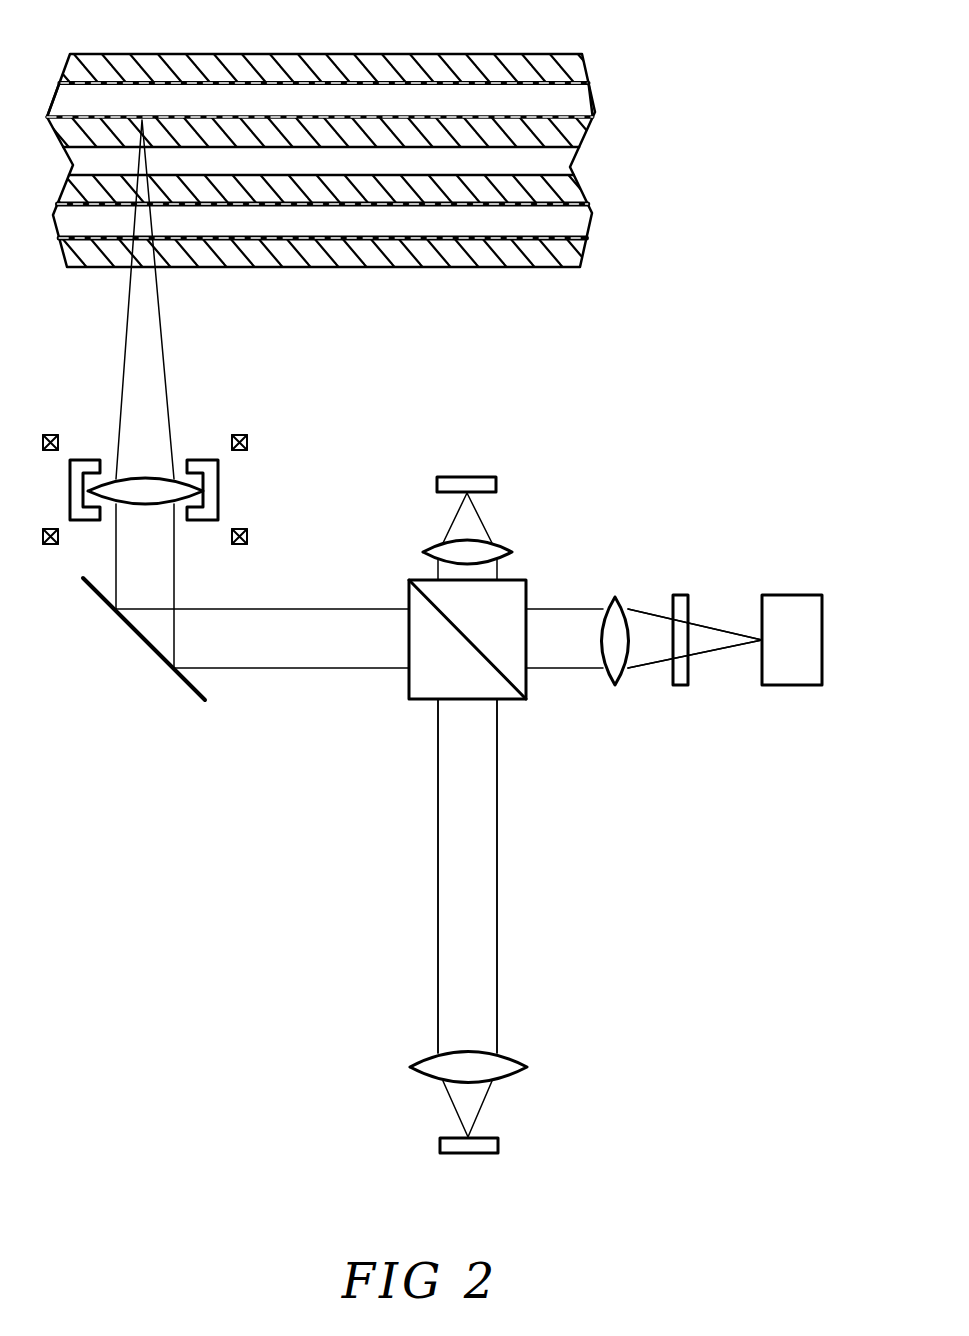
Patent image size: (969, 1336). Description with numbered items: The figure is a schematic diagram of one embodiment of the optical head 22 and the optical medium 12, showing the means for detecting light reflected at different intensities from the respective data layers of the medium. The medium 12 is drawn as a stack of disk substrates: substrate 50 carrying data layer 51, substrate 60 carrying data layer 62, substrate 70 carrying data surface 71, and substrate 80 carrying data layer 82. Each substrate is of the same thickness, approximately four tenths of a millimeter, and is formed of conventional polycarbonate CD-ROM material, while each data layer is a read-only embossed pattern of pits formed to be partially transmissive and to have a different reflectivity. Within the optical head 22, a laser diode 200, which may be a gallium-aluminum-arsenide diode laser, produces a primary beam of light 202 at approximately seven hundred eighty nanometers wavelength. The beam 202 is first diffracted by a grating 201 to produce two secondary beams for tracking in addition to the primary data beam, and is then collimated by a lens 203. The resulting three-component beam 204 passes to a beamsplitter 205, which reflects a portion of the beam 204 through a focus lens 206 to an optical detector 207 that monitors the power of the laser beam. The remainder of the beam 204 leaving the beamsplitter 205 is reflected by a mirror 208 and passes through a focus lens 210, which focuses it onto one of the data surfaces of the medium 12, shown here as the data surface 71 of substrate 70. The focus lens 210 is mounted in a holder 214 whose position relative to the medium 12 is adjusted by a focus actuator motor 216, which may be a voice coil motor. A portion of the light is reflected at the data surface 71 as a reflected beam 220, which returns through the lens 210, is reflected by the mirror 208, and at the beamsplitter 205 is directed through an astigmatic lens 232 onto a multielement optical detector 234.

The medium 12 is at (370, 202).
The substrate 80 is at (585, 61).
The data layer 82 is at (594, 97).
The data surface 71 is at (597, 113).
The substrate 70 is at (584, 146).
The substrate 60 is at (586, 184).
The data layer 62 is at (592, 212).
The data layer 51 is at (588, 236).
The substrate 50 is at (582, 262).
The optical head 22 is at (432, 641).
The laser diode 200 is at (796, 595).
The grating 201 is at (680, 688).
The primary beam of light 202 is at (713, 641).
The lens 203 is at (618, 594).
The three-component beam 204 is at (153, 333).
The beamsplitter 205 is at (407, 590).
The focus lens 206 is at (421, 552).
The optical detector 207 is at (456, 474).
The mirror 208 is at (145, 645).
The focus lens 210 is at (178, 505).
The holder 214 is at (207, 460).
The focus actuator motor 216 is at (248, 443).
The reflected beam 220 is at (436, 738).
The astigmatic lens 232 is at (530, 1068).
The multielement optical detector 234 is at (500, 1148).